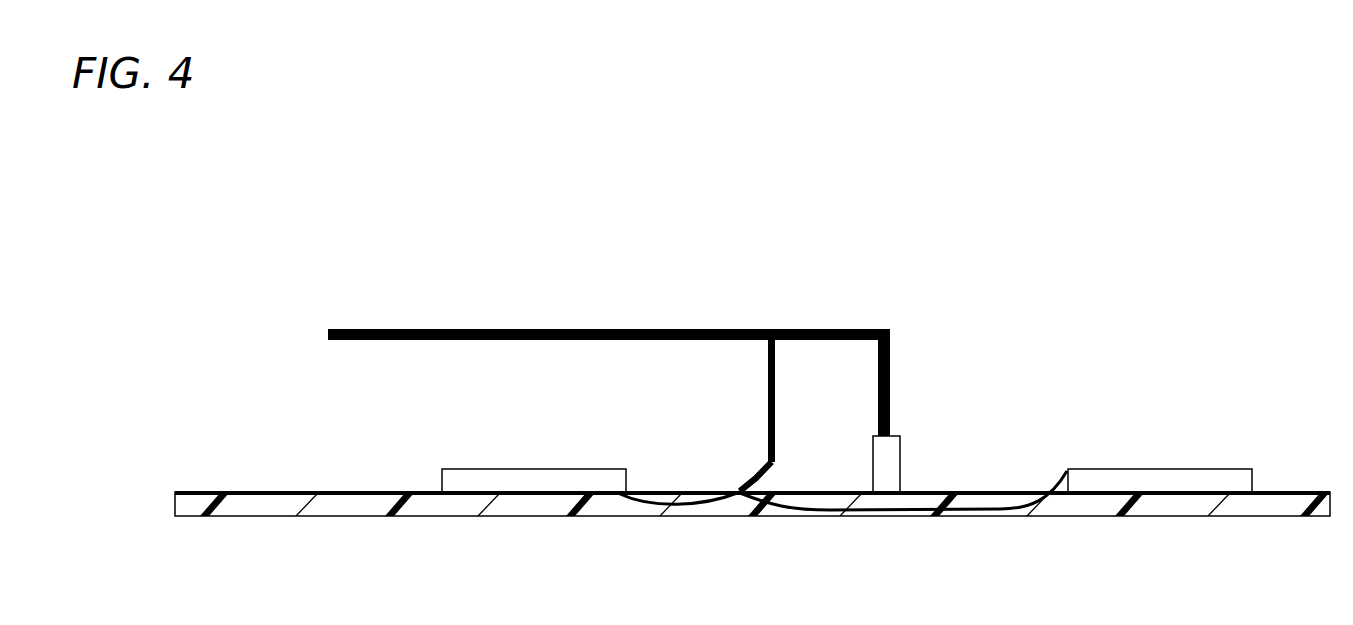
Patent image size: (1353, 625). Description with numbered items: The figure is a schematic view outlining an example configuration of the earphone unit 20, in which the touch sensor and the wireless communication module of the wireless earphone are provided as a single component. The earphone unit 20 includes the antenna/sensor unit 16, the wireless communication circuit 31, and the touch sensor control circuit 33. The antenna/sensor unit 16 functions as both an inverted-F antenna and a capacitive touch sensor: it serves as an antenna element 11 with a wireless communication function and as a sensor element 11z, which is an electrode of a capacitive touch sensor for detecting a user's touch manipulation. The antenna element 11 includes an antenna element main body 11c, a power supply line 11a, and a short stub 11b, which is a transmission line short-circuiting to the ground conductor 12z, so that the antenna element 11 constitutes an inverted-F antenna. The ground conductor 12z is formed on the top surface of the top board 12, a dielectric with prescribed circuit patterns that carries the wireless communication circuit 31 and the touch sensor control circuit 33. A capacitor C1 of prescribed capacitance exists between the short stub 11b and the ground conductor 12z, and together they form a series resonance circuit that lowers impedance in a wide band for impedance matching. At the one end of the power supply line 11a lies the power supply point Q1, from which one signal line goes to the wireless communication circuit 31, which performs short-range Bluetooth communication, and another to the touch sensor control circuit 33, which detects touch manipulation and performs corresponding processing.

The top board 12 is at (200, 509).
The ground conductor 12z is at (362, 490).
The antenna/sensor unit 16 is at (634, 375).
The antenna element 11 is at (646, 386).
The power supply line 11a is at (768, 408).
The short stub 11b is at (891, 412).
The antenna element main body 11c is at (490, 340).
The sensor element 11z is at (793, 330).
The power supply point Q1 is at (775, 463).
The capacitor C1 is at (898, 470).
The wireless communication circuit 31 is at (505, 469).
The touch sensor control circuit 33 is at (1153, 469).
The earphone unit 20 is at (990, 290).